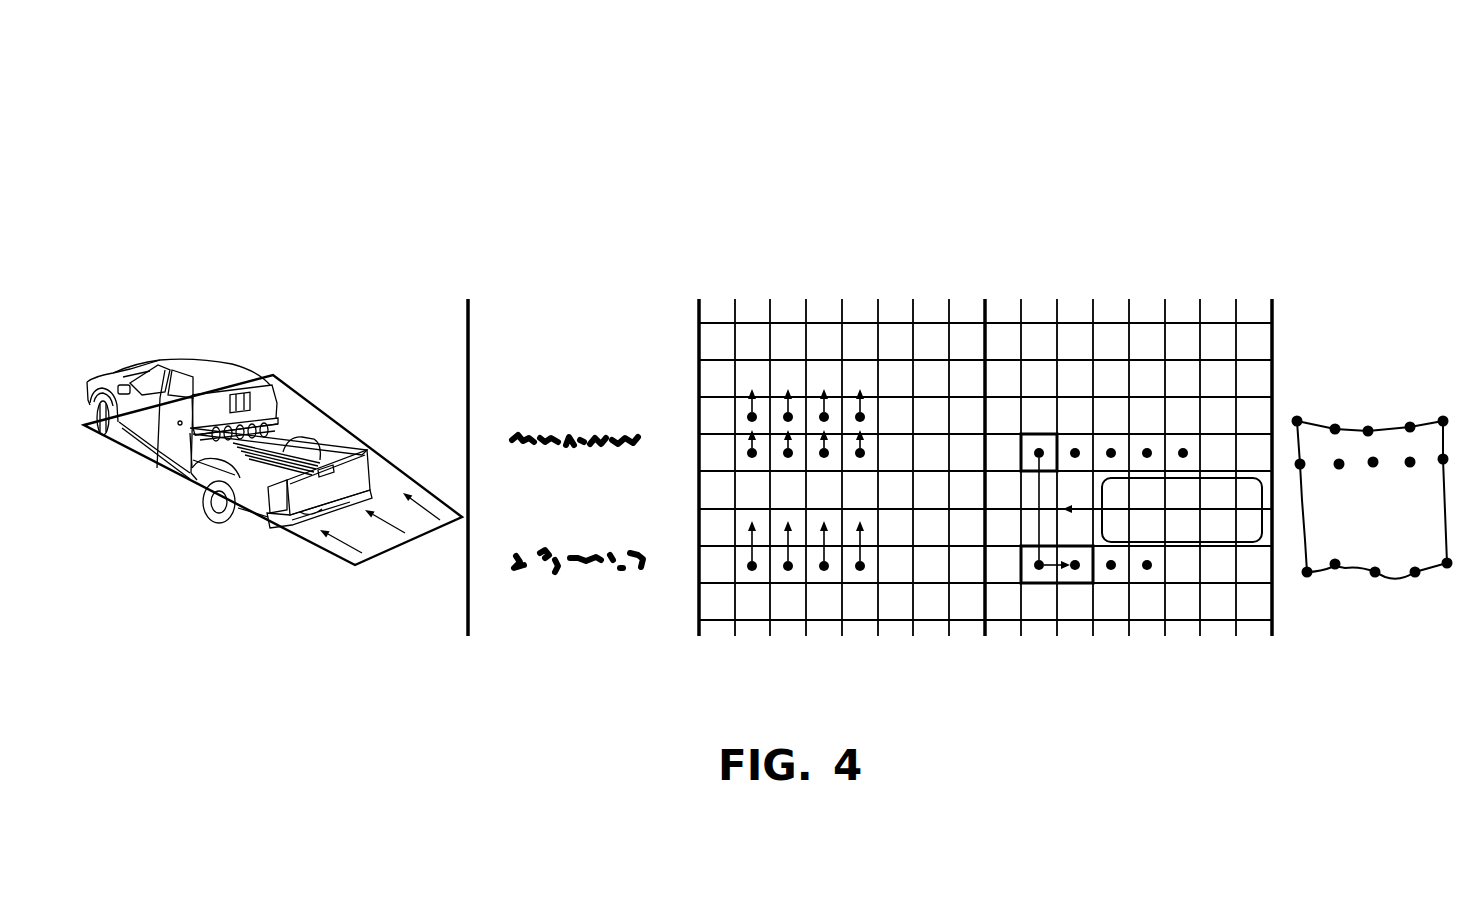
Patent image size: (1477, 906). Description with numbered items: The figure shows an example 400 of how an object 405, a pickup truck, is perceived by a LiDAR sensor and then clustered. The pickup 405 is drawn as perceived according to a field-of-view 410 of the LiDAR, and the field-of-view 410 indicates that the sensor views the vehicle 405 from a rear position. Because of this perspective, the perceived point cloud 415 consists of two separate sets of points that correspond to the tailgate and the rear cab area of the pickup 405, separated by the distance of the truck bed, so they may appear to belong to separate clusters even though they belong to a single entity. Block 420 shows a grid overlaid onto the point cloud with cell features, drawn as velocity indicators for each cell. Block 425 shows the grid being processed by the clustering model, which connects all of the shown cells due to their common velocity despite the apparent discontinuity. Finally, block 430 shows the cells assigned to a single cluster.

The example 400 is at (925, 110).
The object 405 is at (193, 362).
The field-of-view 410 is at (355, 565).
The point cloud 415 is at (583, 285).
The block 420 is at (827, 285).
The block 425 is at (1115, 285).
The block 430 is at (1367, 285).